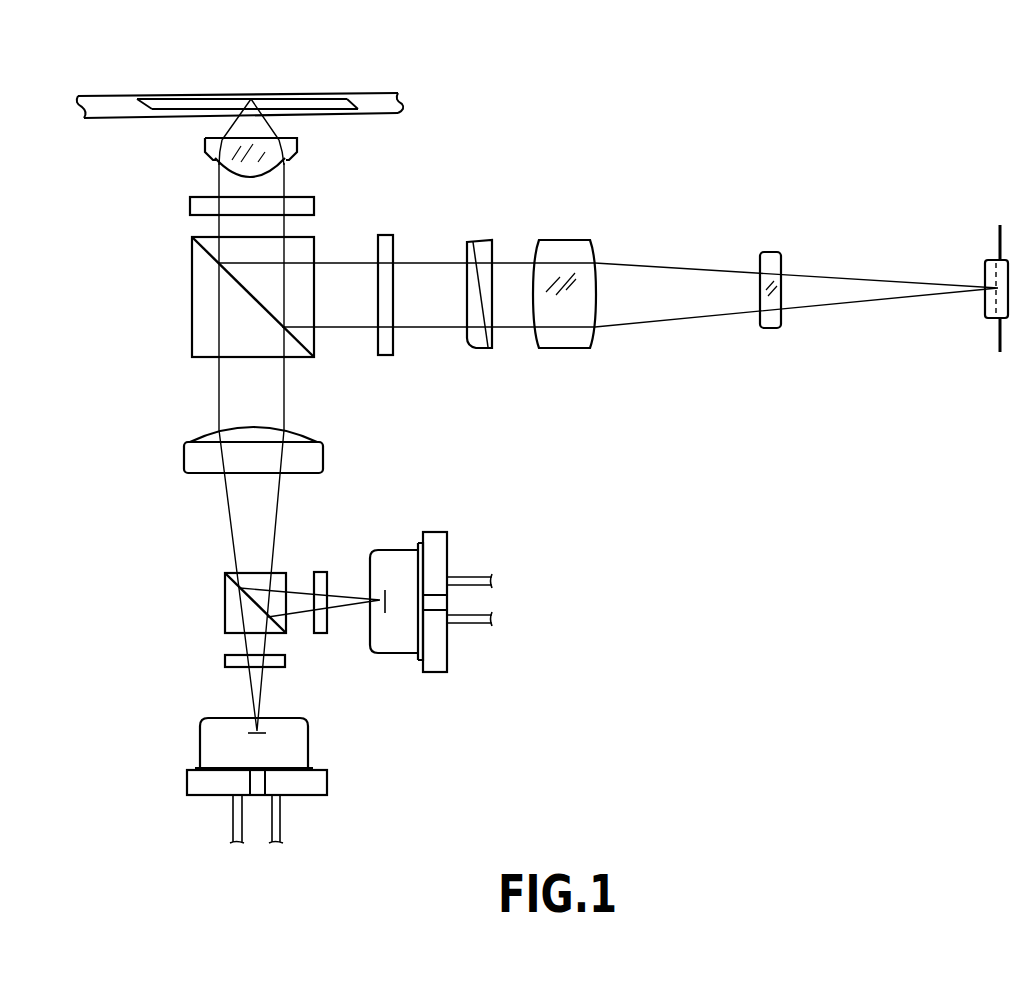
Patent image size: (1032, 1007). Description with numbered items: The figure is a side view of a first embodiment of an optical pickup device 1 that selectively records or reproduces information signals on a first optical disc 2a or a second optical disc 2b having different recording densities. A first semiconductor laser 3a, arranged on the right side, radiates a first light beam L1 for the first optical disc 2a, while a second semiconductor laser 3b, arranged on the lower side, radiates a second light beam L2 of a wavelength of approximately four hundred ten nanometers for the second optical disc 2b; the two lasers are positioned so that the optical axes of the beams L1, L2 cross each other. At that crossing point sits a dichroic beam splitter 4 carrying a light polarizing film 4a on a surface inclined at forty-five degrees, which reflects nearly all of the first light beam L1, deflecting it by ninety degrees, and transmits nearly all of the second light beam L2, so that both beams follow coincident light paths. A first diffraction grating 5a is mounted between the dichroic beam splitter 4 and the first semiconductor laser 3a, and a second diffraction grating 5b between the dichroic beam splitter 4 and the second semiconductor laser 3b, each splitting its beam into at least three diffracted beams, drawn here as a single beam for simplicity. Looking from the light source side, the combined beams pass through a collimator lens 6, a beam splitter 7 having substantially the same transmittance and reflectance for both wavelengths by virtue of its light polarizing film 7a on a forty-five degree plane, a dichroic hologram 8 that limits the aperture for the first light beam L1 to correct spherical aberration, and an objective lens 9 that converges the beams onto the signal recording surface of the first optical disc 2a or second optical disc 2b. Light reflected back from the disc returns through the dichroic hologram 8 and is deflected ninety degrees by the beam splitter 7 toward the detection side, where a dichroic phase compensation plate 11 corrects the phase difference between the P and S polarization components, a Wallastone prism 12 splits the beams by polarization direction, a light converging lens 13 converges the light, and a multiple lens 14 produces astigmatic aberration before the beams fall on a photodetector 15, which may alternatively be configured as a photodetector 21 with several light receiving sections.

The optical pickup device 1 is at (384, 66).
The first optical disc 2a is at (133, 98).
The second optical disc 2b is at (325, 111).
The first semiconductor laser 3a is at (405, 648).
The second semiconductor laser 3b is at (293, 753).
The dichroic beam splitter 4 is at (216, 583).
The light polarizing film 4a is at (240, 574).
The first diffraction grating 5a is at (322, 635).
The second diffraction grating 5b is at (225, 660).
The collimator lens 6 is at (322, 460).
The beam splitter 7 is at (219, 306).
The light polarizing film 7a is at (244, 281).
The dichroic hologram 8 is at (190, 207).
The objective lens 9 is at (207, 149).
The dichroic phase compensation plate 11 is at (387, 236).
The Wallastone prism 12 is at (485, 242).
The light converging lens 13 is at (572, 342).
The multiple lens 14 is at (775, 256).
The photodetector 15 is at (948, 308).
The photodetector 21 is at (985, 312).
The first light beam L1 is at (340, 597).
The second light beam L2 is at (263, 687).